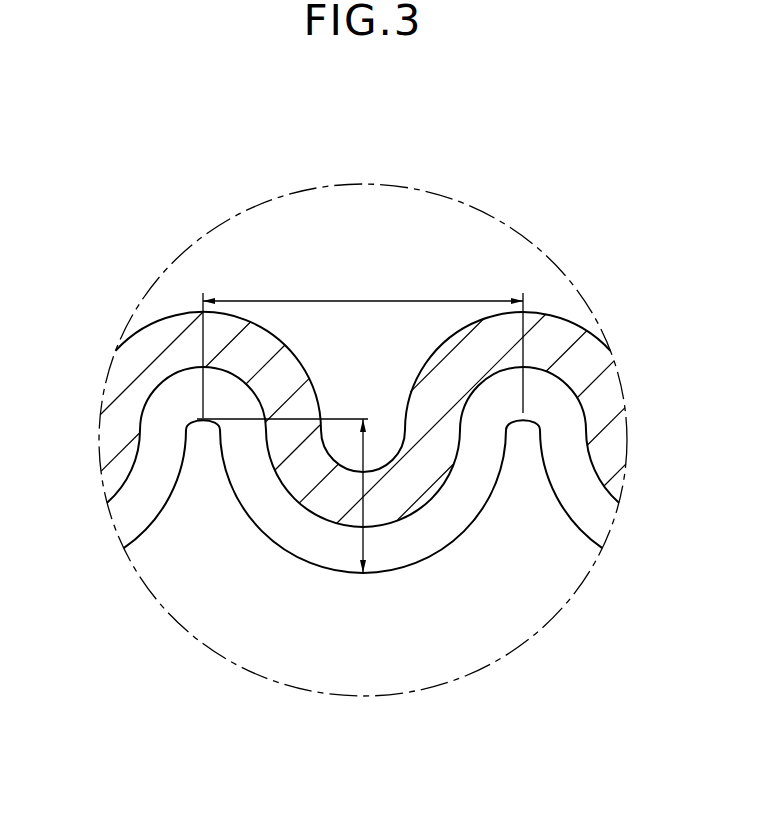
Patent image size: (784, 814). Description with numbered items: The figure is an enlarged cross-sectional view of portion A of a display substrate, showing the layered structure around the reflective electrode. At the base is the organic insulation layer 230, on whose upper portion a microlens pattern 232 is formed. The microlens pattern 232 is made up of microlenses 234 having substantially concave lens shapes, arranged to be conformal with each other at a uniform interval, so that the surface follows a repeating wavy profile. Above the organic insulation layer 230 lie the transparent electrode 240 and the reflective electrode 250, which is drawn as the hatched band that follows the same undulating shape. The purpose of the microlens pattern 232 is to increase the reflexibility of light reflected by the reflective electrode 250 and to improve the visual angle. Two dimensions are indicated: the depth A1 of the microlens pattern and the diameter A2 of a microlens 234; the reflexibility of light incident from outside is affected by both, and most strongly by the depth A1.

The organic insulation layer 230 is at (357, 682).
The microlens pattern 232 is at (186, 530).
The microlens 234 is at (137, 538).
The transparent electrode 240 is at (602, 517).
The reflective electrode 250 is at (593, 361).
The portion A is at (449, 200).
The depth of the microlens pattern A1 is at (282, 496).
The diameter of the microlens A2 is at (363, 347).